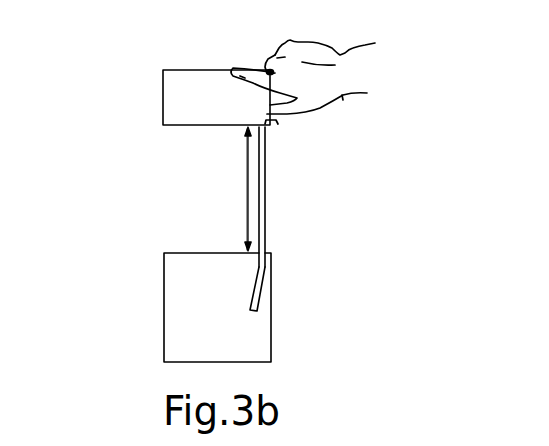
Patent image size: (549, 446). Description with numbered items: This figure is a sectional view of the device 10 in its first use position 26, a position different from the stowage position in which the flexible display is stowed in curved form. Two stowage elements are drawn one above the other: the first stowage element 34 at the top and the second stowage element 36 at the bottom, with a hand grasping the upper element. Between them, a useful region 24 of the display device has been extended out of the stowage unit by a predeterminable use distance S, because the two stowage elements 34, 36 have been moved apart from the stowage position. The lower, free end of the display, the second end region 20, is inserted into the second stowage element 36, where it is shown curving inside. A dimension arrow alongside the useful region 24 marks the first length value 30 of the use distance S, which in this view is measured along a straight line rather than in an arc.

The device 10 is at (379, 116).
The second end region 20 is at (271, 301).
The useful region 24 is at (275, 210).
The first use position 26 is at (173, 200).
The first length value 30 is at (247, 183).
The first stowage element 34 is at (155, 96).
The second stowage element 36 is at (154, 331).
The use distance S is at (238, 215).